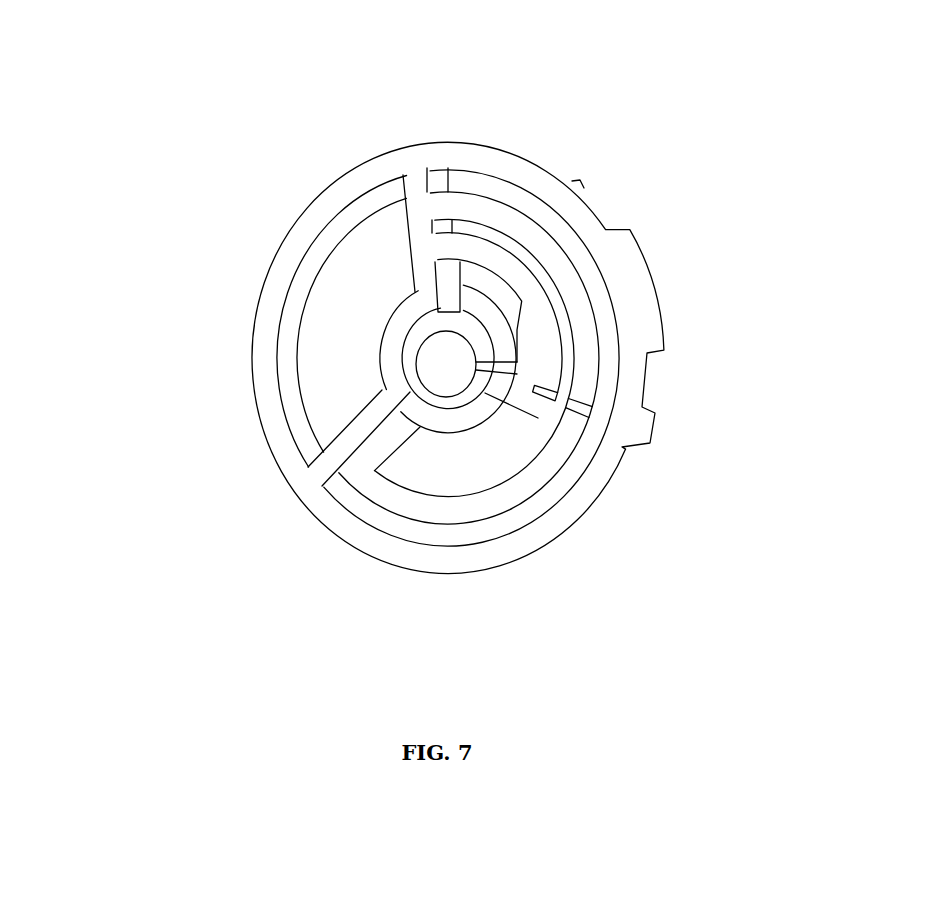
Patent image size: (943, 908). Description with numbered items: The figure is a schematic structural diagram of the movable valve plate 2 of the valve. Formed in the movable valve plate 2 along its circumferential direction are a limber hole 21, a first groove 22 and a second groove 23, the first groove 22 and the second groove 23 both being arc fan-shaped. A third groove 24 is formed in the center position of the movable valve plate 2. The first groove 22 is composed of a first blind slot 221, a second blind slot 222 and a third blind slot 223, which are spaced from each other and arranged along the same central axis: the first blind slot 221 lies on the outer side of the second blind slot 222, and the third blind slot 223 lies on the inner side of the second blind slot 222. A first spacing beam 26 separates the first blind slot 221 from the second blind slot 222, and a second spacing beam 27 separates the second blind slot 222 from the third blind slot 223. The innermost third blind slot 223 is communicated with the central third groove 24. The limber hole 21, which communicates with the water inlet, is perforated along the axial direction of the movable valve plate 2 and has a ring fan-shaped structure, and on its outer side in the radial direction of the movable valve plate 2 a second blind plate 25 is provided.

The movable valve plate 2 is at (485, 142).
The limber hole 21 is at (448, 468).
The first groove 22 is at (578, 255).
The second groove 23 is at (325, 362).
The third groove 24 is at (425, 362).
The second blind plate 25 is at (527, 497).
The first spacing beam 26 is at (565, 293).
The second spacing beam 27 is at (530, 352).
The first blind slot 221 is at (447, 177).
The second blind slot 222 is at (446, 226).
The third blind slot 223 is at (464, 296).